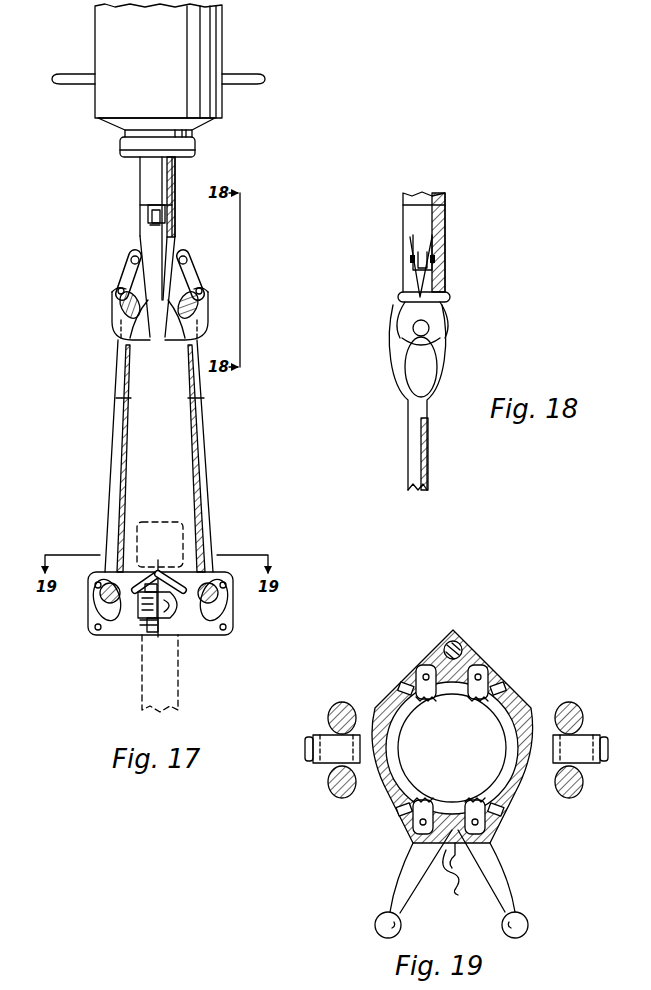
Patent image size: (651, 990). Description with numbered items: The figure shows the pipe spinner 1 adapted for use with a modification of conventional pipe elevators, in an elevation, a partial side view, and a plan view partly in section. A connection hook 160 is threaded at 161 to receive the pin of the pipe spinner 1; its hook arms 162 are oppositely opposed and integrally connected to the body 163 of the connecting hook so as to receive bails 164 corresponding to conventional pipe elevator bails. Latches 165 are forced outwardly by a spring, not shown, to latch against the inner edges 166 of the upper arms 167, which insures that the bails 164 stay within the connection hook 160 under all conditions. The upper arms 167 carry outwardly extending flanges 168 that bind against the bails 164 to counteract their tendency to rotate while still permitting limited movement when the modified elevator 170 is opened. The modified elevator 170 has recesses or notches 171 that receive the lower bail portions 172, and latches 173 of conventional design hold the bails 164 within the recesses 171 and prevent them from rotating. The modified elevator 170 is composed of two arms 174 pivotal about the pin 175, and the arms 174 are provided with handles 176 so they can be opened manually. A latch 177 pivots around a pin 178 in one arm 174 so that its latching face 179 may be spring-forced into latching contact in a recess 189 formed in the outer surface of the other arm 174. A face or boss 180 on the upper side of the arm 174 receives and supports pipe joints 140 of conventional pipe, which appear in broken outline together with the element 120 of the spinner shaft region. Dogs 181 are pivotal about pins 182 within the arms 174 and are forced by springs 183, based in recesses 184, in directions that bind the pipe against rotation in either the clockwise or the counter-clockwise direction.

In FIG. 17, the pipe spinner 1 is at (226, 62).
In FIG. 17, the shaft 120 is at (150, 212).
In FIG. 17, the threaded portion 161 is at (150, 216).
In FIG. 17, the body of the connecting hook 163 is at (160, 234).
In FIG. 17, the connection hook 160 is at (180, 228).
In FIG. 18, the connection hook 160 is at (400, 224).
In FIG. 17, the latch 165 is at (195, 282).
In FIG. 18, the latch 165 is at (423, 300).
In FIG. 17, the inner edge of upper arm 166 is at (203, 294).
In FIG. 17, the upper arm 167 is at (120, 290).
In FIG. 18, the upper arm 167 is at (410, 306).
In FIG. 17, the hook arm 162 is at (115, 330).
In FIG. 17, the bail 164 is at (116, 452).
In FIG. 18, the bail 164 is at (409, 443).
In FIG. 19, the bail 164 is at (330, 792).
In FIG. 17, the pipe joint 140 is at (158, 530).
In FIG. 17, the modified elevator 170 is at (215, 637).
In FIG. 17, the latch 173 is at (93, 607).
In FIG. 19, the latch 173 is at (310, 749).
In FIG. 17, the lower bail portion 172 is at (205, 580).
In FIG. 17, the face or boss 180 is at (170, 572).
In FIG. 19, the face or boss 180 is at (505, 748).
In FIG. 17, the pin 178 is at (160, 636).
In FIG. 17, the recess 189 is at (182, 600).
In FIG. 17, the latching face 179 is at (178, 617).
In FIG. 19, the latching face 179 is at (470, 848).
In FIG. 17, the recess or notch 171 is at (120, 630).
In FIG. 17, the latch 177 is at (145, 628).
In FIG. 19, the latch 177 is at (456, 892).
In FIG. 18, the outwardly extending flange 168 is at (450, 297).
In FIG. 19, the arm 174 is at (515, 692).
In FIG. 19, the dog 181 is at (430, 700).
In FIG. 19, the pin 175 is at (462, 645).
In FIG. 19, the spring 183 is at (412, 670).
In FIG. 19, the pin 182 is at (487, 672).
In FIG. 19, the recess 184 is at (398, 690).
In FIG. 19, the handle 176 is at (504, 896).